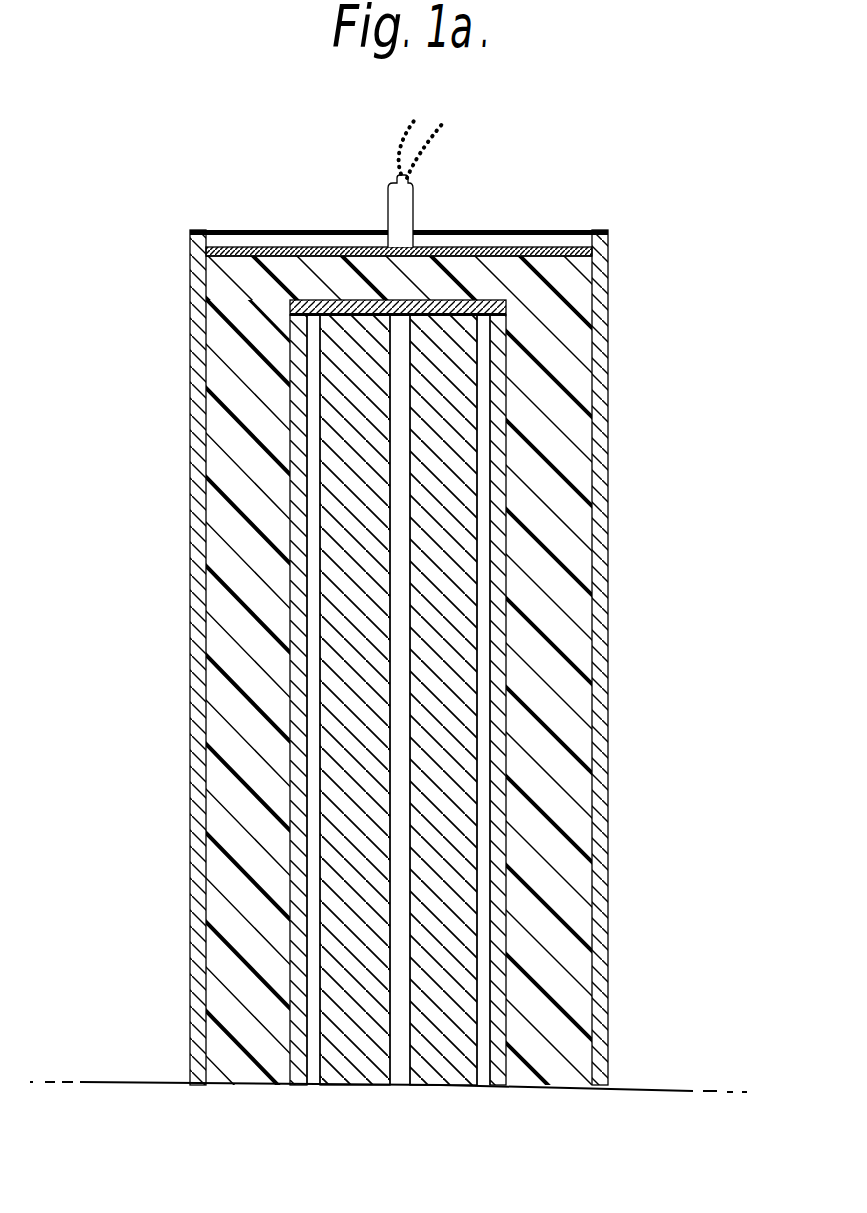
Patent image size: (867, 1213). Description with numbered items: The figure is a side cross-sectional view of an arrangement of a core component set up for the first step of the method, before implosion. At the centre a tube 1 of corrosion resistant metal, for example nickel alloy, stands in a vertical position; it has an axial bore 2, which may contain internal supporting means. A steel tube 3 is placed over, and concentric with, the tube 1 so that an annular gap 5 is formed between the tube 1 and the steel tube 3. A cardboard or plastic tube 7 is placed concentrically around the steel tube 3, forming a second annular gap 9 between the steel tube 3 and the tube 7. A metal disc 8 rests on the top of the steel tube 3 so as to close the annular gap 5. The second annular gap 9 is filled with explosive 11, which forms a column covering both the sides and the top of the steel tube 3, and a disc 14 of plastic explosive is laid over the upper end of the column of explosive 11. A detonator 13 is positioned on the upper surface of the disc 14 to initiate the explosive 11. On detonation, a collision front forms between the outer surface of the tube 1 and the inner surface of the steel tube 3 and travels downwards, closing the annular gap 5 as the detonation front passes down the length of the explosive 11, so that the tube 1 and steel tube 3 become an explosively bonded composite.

The tube 1 is at (440, 1063).
The axial bore 2 is at (397, 1078).
The steel tube 3 is at (497, 488).
The annular gap 5 is at (312, 798).
The tube 7 is at (200, 583).
The metal disc 8 is at (470, 280).
The second annular gap 9 is at (246, 1083).
The explosive 11 is at (558, 347).
The detonator 13 is at (395, 203).
The disc of plastic explosive 14 is at (277, 247).